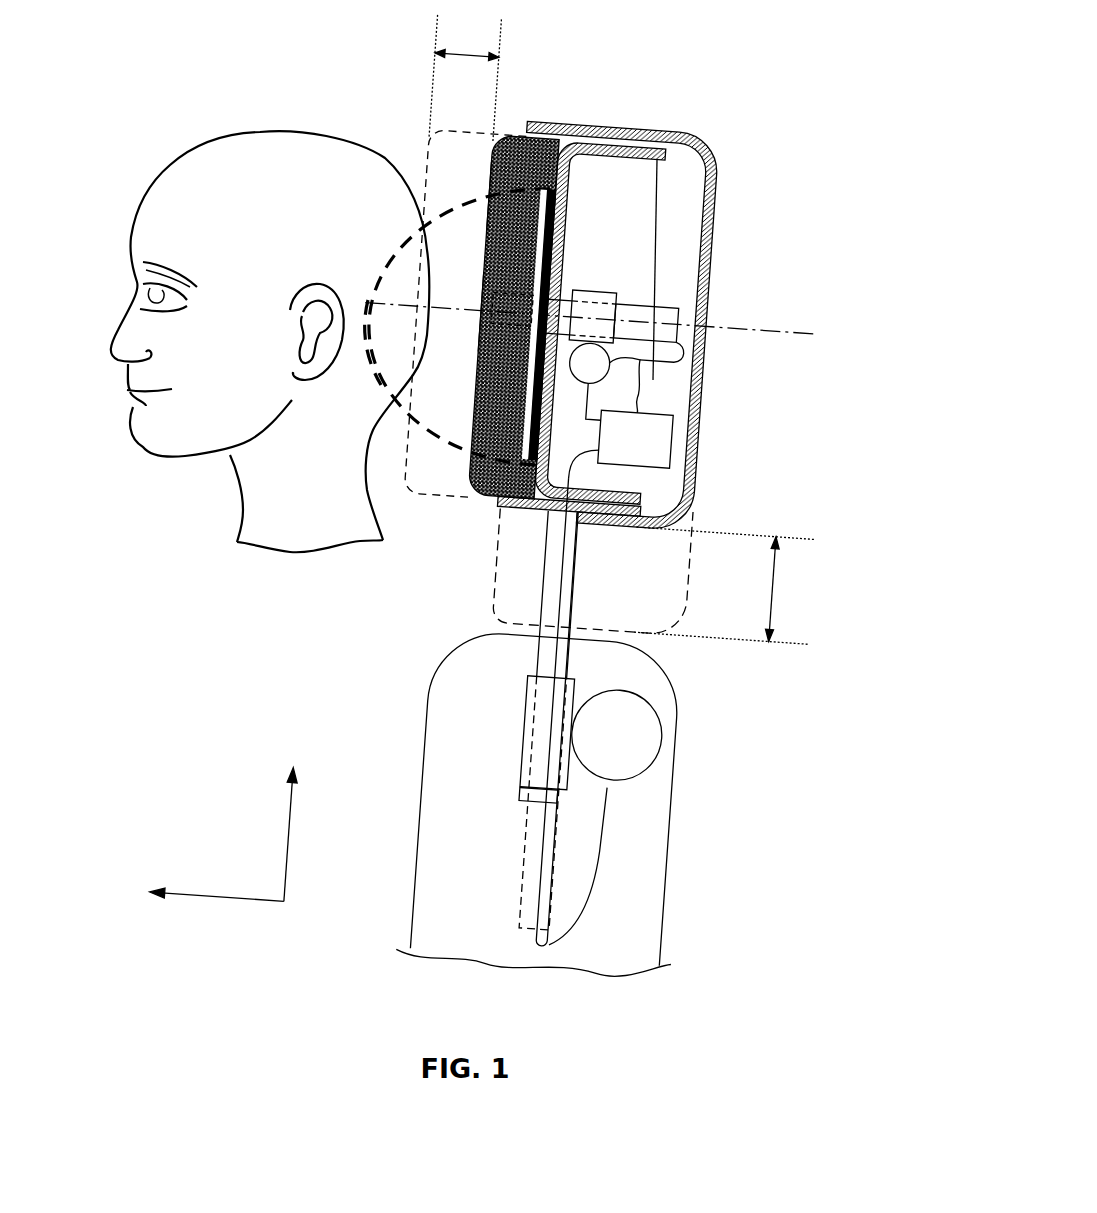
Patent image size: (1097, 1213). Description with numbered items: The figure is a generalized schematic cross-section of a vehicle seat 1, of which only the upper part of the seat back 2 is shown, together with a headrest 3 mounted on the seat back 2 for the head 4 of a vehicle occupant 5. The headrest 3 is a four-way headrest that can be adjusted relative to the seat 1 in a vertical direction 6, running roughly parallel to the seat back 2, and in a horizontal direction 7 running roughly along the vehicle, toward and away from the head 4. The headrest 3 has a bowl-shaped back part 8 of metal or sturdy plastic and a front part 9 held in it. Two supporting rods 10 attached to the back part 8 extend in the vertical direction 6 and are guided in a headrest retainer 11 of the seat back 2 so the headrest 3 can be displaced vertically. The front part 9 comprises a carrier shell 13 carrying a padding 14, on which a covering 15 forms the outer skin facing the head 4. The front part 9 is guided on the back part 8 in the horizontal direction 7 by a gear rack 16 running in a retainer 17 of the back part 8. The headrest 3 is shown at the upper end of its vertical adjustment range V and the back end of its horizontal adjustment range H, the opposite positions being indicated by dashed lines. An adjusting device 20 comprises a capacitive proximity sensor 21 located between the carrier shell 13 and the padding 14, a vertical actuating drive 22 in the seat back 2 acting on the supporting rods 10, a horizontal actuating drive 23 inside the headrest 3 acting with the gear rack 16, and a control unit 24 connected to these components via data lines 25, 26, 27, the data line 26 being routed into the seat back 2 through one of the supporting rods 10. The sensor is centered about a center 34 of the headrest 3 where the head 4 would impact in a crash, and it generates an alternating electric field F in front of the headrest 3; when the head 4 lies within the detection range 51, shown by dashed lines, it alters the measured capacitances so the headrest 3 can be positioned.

The seat 1 is at (797, 733).
The seat back 2 is at (663, 905).
The headrest 3 is at (762, 104).
The head 4 is at (270, 296).
The vehicle occupant 5 is at (253, 130).
The vertical direction 6 is at (290, 803).
The horizontal direction 7 is at (195, 893).
The back part 8 is at (713, 222).
The front part 9 is at (440, 138).
The supporting rods 10 is at (572, 608).
The headrest retainer 11 is at (523, 760).
The carrier shell 13 is at (628, 150).
The padding 14 is at (545, 143).
The covering 15 is at (480, 203).
The gear rack 16 is at (673, 308).
The retainer 17 is at (595, 290).
The adjusting device 20 is at (683, 395).
The capacitive proximity sensor 21 is at (547, 222).
The vertical actuating drive 22 is at (657, 763).
The horizontal actuating drive 23 is at (610, 363).
The control unit 24 is at (670, 443).
The data line 25 is at (687, 340).
The data line 26 is at (548, 553).
The data line 27 is at (585, 397).
The center 34 is at (485, 300).
The detection range 51 is at (365, 335).
The alternating electric field F is at (397, 250).
The horizontal adjustment range H is at (462, 50).
The vertical adjustment range V is at (772, 593).